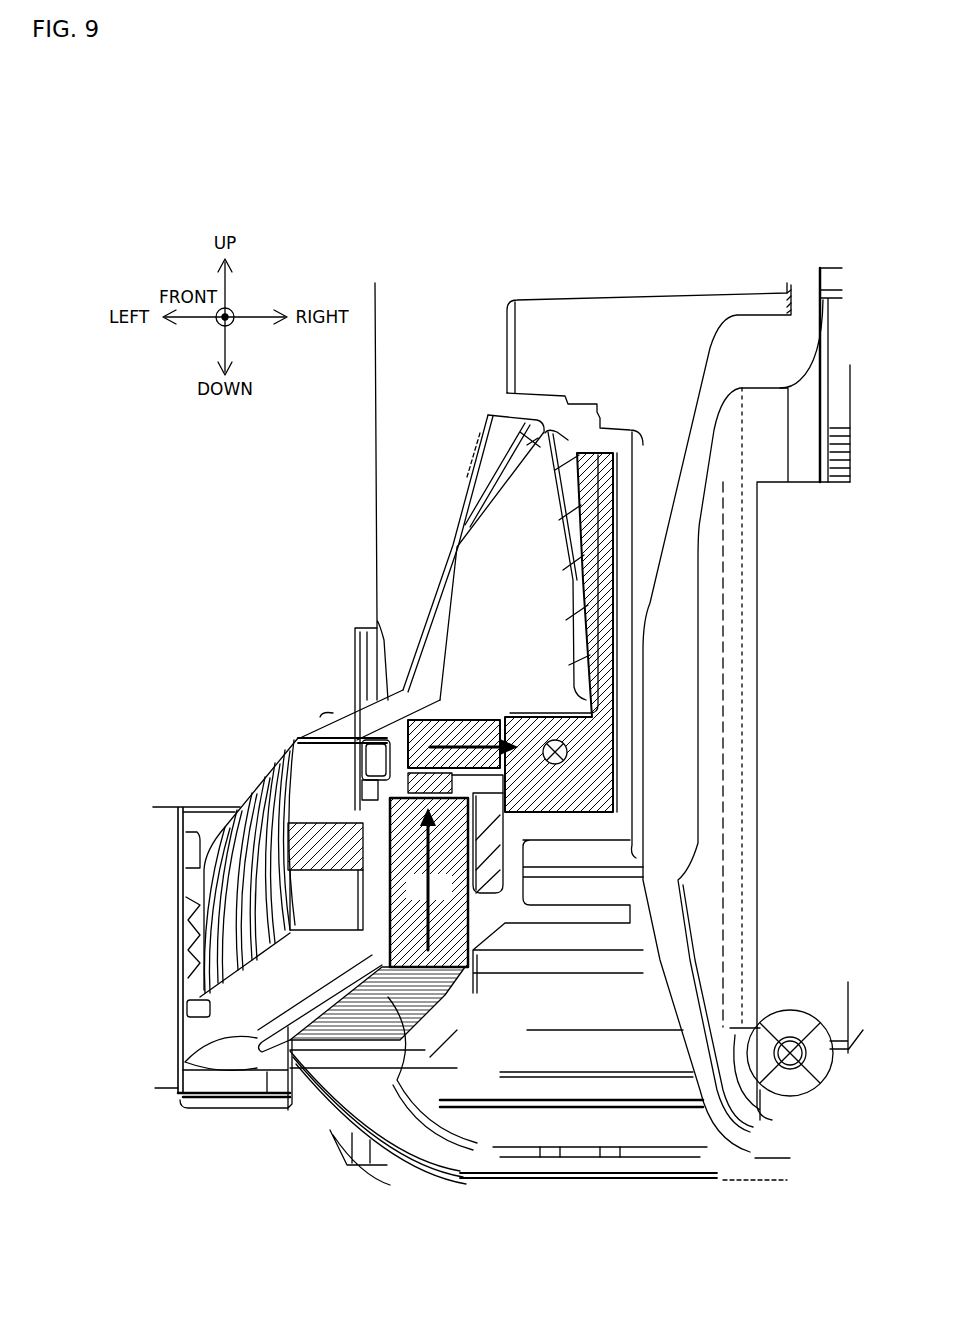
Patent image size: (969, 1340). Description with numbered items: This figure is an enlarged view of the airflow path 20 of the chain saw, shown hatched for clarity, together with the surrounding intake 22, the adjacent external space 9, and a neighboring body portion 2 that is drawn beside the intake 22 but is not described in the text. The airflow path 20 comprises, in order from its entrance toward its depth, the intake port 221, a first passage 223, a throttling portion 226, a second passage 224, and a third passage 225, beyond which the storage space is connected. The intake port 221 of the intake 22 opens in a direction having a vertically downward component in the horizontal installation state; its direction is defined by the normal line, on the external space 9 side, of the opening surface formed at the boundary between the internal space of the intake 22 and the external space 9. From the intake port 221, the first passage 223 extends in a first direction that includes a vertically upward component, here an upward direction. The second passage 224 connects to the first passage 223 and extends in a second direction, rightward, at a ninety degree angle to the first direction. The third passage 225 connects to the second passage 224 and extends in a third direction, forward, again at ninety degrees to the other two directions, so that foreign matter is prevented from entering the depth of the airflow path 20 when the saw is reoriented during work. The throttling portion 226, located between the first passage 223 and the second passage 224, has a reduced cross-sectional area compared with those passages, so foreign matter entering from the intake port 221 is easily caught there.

The vehicle body 2 is at (583, 1000).
The external space 9 is at (365, 1259).
The airflow path 20 is at (313, 433).
The intake 22 is at (183, 1027).
The intake port 221 is at (312, 1110).
The first passage 223 is at (410, 836).
The second passage 224 is at (447, 735).
The third passage 225 is at (595, 523).
The throttling portion 226 is at (373, 773).